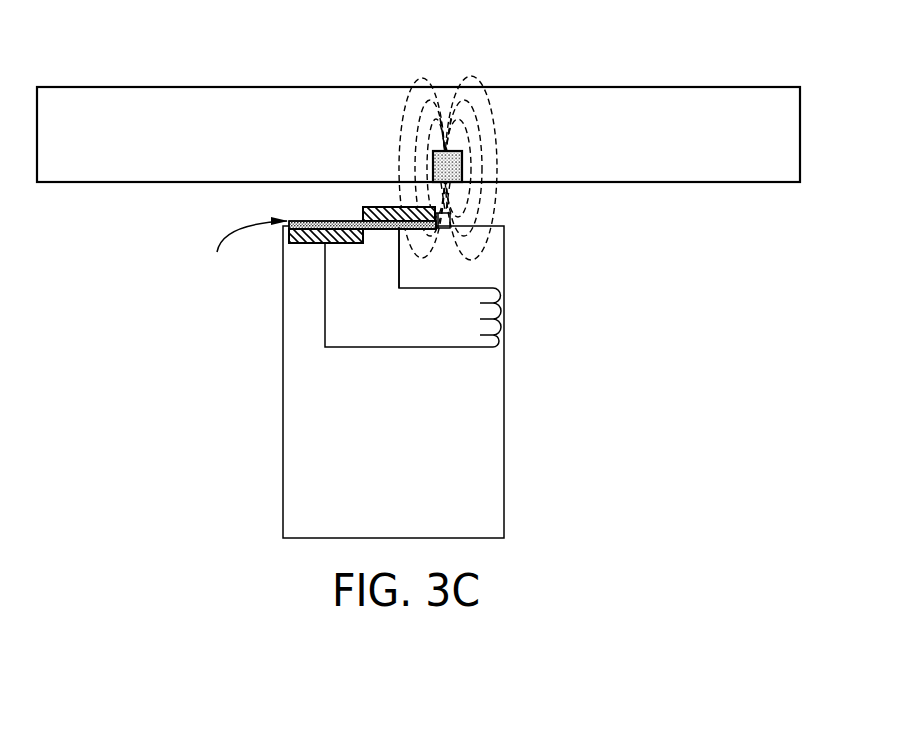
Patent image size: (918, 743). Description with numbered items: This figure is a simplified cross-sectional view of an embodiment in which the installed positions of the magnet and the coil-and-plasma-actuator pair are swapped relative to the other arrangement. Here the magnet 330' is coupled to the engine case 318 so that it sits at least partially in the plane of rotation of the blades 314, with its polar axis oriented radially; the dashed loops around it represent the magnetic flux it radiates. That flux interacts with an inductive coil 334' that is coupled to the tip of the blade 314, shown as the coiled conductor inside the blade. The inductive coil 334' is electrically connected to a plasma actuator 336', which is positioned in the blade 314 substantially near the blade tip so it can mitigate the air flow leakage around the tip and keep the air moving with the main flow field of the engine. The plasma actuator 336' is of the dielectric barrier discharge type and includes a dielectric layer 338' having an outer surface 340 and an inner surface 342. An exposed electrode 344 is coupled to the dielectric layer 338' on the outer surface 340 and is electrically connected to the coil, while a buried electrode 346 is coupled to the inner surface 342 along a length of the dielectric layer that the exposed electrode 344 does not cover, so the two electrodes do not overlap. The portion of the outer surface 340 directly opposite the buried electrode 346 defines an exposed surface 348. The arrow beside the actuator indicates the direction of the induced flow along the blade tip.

The engine case 318 is at (735, 105).
The blade 314 is at (488, 473).
The inductive coil 334' is at (413, 320).
The magnet 330' is at (479, 168).
The buried electrode 346 is at (433, 215).
The inner surface 342 is at (340, 222).
The exposed electrode 344 is at (307, 245).
The dielectric layer 338' is at (515, 243).
The outer surface 340 is at (405, 233).
The exposed surface 348 is at (383, 230).
The plasma actuator 336' is at (240, 250).